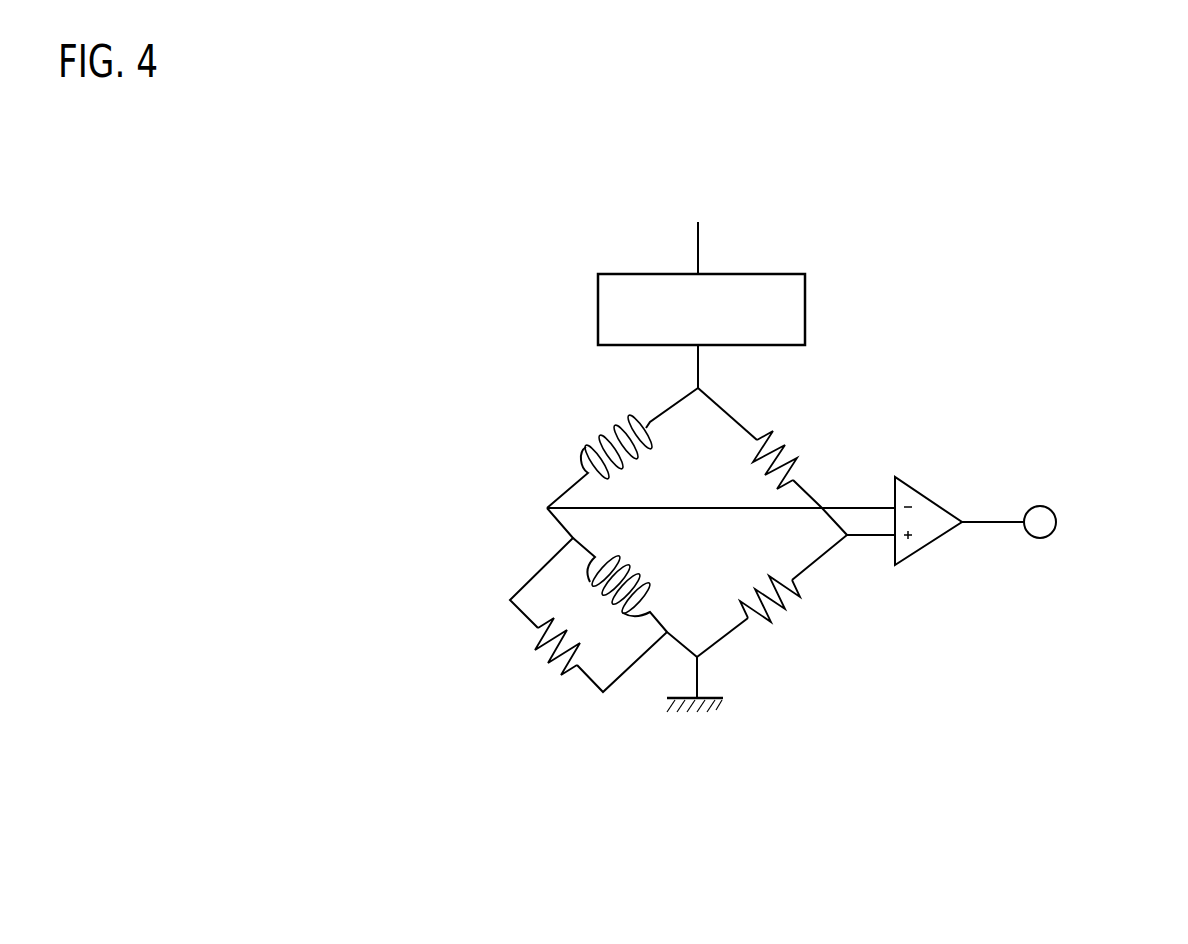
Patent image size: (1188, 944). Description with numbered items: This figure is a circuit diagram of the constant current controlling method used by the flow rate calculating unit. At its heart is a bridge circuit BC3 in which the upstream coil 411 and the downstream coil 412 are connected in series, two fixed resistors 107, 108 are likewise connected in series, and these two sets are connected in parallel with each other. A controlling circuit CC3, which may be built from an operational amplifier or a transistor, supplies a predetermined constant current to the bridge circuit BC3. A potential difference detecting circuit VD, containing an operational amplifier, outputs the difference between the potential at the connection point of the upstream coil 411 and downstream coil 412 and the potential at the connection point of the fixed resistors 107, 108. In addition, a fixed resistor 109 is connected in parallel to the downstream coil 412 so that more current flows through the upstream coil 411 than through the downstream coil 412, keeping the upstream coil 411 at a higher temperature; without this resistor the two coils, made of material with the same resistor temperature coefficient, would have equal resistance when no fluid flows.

The controlling circuit CC3 is at (638, 272).
The bridge circuit BC3 is at (600, 366).
The upstream coil 411 is at (603, 430).
The downstream coil 412 is at (587, 587).
The fixed resistor 107 is at (790, 440).
The fixed resistor 108 is at (795, 618).
The fixed resistor 109 is at (537, 675).
The potential difference detecting circuit VD is at (966, 474).